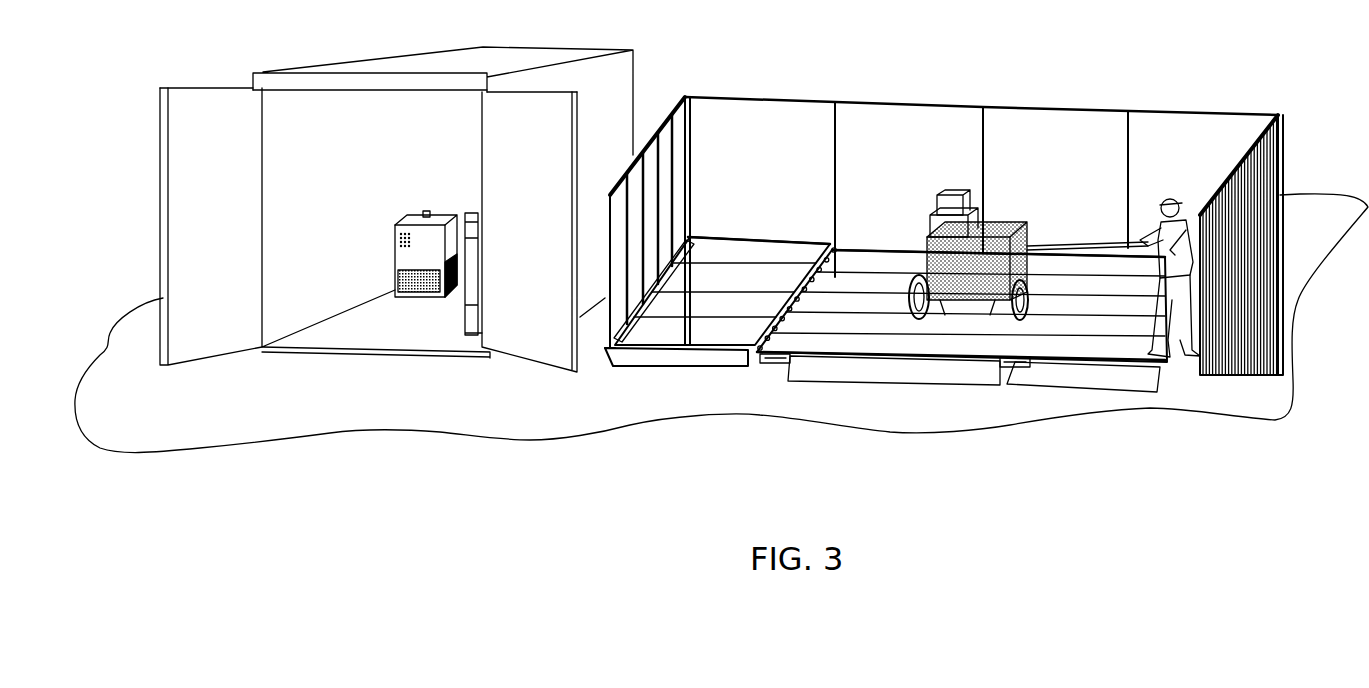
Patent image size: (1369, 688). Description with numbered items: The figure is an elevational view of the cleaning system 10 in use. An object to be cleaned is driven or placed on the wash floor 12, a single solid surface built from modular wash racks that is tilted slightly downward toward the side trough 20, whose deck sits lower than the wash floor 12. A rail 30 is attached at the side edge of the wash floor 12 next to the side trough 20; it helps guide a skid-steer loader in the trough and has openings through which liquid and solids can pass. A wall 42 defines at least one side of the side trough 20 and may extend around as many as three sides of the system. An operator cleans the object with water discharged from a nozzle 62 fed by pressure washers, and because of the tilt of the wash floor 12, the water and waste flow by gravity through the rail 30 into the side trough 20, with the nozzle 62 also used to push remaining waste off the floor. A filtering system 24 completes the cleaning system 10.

The cleaning system 10 is at (1010, 72).
The wash floor 12 is at (865, 268).
The side trough 20 is at (678, 330).
The filtering system 24 is at (460, 308).
The rail 30 is at (812, 262).
The wall 42 is at (668, 152).
The nozzle 62 is at (1100, 235).